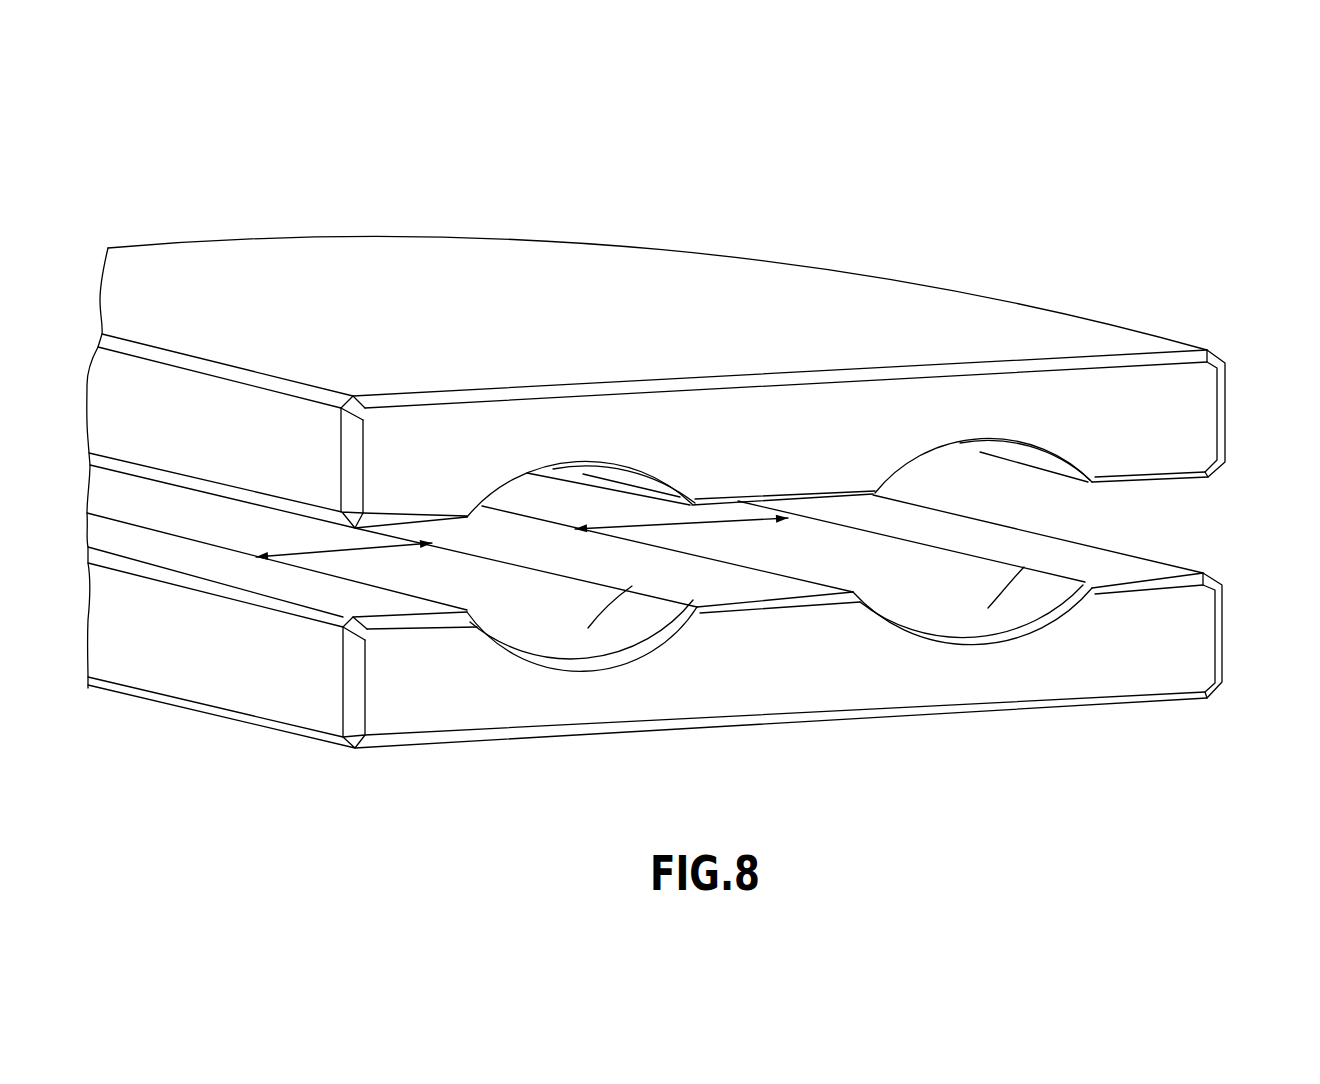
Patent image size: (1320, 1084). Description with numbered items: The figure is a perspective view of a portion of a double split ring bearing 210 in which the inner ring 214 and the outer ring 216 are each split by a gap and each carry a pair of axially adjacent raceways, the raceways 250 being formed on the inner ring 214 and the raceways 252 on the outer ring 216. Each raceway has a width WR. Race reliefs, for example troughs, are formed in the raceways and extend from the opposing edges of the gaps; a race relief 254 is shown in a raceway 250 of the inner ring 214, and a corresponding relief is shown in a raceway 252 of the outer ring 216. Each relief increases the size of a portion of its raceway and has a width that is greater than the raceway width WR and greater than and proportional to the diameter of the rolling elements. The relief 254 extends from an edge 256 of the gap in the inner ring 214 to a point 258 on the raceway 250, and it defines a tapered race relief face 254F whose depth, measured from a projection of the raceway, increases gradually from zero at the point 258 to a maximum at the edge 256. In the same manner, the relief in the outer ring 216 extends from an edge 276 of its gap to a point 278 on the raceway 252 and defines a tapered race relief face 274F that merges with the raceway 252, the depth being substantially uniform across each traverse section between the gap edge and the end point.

The bearing 210 is at (874, 148).
The inner ring 214 is at (686, 649).
The outer ring 216 is at (689, 434).
The raceways 250 is at (452, 577).
The raceways 252 is at (555, 473).
The race relief 254 is at (649, 611).
The race relief face 254F is at (603, 634).
The edge of the gap 256 is at (470, 703).
The point on the raceway 258 is at (547, 640).
The race relief face 274F is at (643, 485).
The edge of the gap 276 is at (413, 442).
The point on the raceway 278 is at (570, 475).
The width of the raceway WR is at (317, 550).